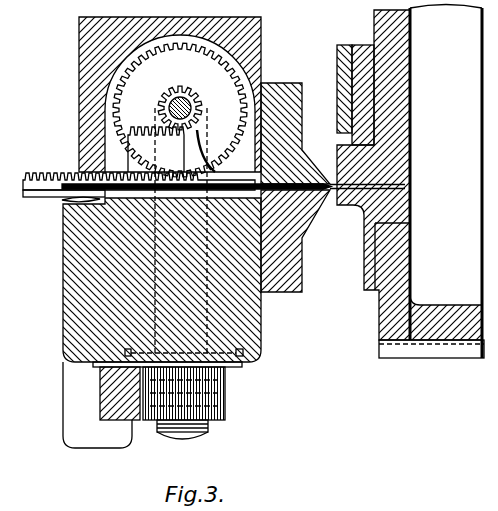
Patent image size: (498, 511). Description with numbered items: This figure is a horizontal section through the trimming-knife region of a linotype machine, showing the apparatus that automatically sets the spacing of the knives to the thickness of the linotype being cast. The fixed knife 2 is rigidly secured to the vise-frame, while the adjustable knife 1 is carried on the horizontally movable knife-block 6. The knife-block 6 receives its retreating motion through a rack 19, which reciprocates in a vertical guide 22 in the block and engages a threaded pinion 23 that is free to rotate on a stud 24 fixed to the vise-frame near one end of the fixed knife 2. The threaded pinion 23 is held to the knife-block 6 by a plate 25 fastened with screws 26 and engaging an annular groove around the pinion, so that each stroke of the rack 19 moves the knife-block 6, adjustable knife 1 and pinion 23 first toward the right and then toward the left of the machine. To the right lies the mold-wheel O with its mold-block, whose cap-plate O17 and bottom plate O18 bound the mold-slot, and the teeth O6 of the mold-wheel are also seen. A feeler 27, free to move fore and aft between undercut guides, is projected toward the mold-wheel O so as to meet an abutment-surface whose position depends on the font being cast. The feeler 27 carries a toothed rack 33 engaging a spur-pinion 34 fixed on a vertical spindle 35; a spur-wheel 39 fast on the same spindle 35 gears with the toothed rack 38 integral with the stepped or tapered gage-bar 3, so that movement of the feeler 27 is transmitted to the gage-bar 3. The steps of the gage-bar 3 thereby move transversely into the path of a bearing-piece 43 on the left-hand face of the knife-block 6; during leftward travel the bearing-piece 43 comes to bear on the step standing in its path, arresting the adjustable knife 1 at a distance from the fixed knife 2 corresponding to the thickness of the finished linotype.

The adjustable knife 1 is at (292, 293).
The fixed knife 2 is at (204, 100).
The gage-bar 3 is at (26, 197).
The knife-block 6 is at (149, 280).
The rack 19 is at (138, 420).
The vertical guide 22 is at (80, 442).
The threaded pinion 23 is at (226, 409).
The stud 24 is at (208, 427).
The plate 25 is at (240, 365).
The screw 26 is at (246, 354).
The feeler 27 is at (327, 192).
The toothed rack 33 is at (147, 128).
The spur-pinion 34 is at (199, 97).
The vertical spindle 35 is at (193, 107).
The toothed rack 38 is at (50, 173).
The spur-wheel 39 is at (180, 110).
The bearing-piece 43 is at (70, 200).
The mold-wheel O is at (406, 187).
The bottom plate O18 is at (358, 45).
The cap-plate O17 is at (370, 284).
The work piece base plate O6 is at (438, 351).